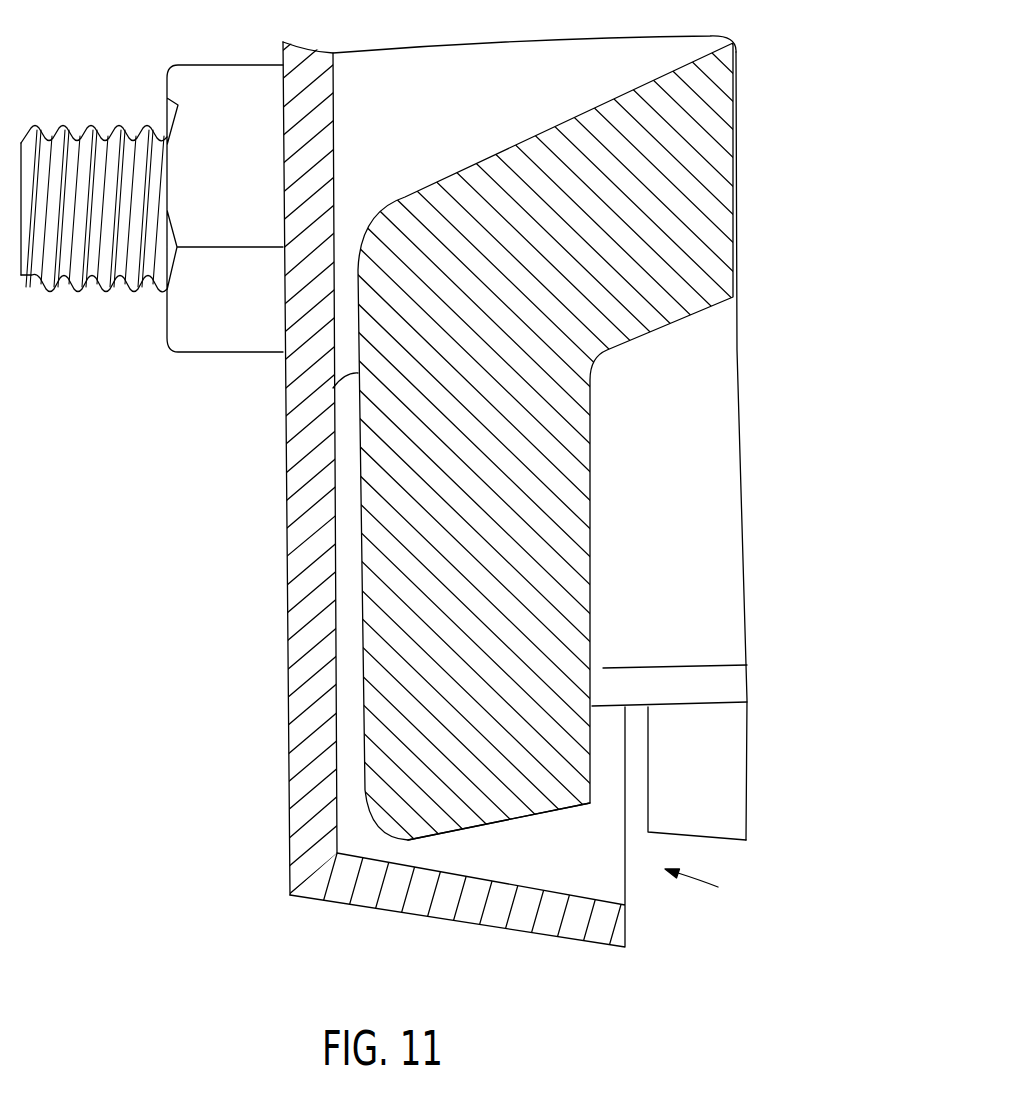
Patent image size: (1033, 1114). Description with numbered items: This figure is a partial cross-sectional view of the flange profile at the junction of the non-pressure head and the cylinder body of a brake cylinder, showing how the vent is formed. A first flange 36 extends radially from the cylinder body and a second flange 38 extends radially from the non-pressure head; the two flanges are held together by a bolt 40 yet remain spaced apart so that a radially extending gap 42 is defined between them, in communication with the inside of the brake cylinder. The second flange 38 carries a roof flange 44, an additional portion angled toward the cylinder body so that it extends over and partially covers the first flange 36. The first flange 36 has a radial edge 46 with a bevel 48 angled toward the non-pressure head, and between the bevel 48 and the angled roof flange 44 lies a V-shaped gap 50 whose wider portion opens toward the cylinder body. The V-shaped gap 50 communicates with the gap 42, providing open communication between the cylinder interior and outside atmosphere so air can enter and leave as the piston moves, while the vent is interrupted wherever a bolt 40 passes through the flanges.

The first flange 36 is at (592, 745).
The second flange 38 is at (300, 576).
The bolt 40 is at (80, 297).
The radially extending gap 42 is at (348, 717).
The roof flange 44 is at (472, 920).
The radial edge 46 is at (592, 783).
The bevel 48 is at (505, 824).
The V-shaped gap 50 is at (704, 886).